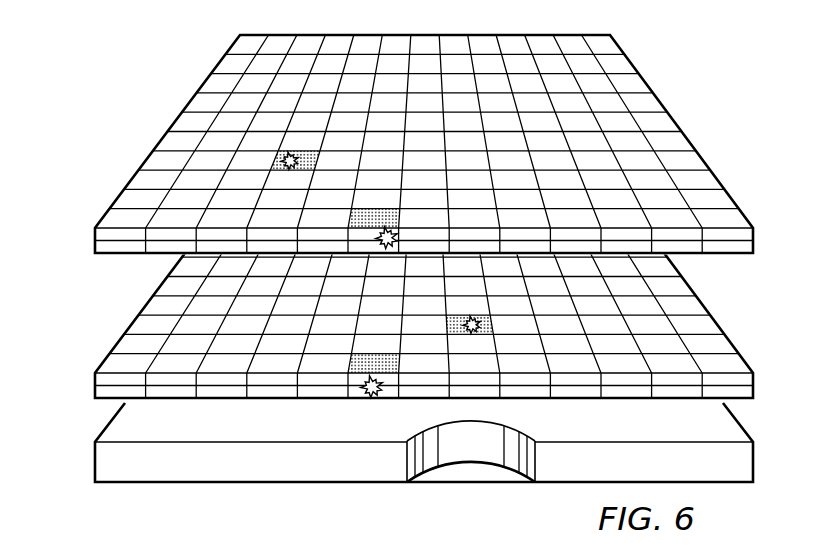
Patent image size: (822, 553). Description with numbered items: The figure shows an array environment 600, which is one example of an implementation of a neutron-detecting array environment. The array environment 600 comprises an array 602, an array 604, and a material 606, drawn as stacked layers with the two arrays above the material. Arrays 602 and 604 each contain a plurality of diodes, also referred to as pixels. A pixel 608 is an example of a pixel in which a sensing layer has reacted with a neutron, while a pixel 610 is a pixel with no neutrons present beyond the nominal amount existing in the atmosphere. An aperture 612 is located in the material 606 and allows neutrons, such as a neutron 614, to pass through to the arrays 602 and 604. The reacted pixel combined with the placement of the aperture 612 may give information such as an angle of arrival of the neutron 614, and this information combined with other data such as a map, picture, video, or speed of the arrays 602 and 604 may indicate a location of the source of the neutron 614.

The array environment 600 is at (727, 92).
The array 602 is at (95, 232).
The array 604 is at (95, 393).
The material 606 is at (95, 462).
The pixel 608 is at (283, 157).
The pixel 610 is at (193, 100).
The aperture 612 is at (477, 452).
The neutron 614 is at (370, 395).